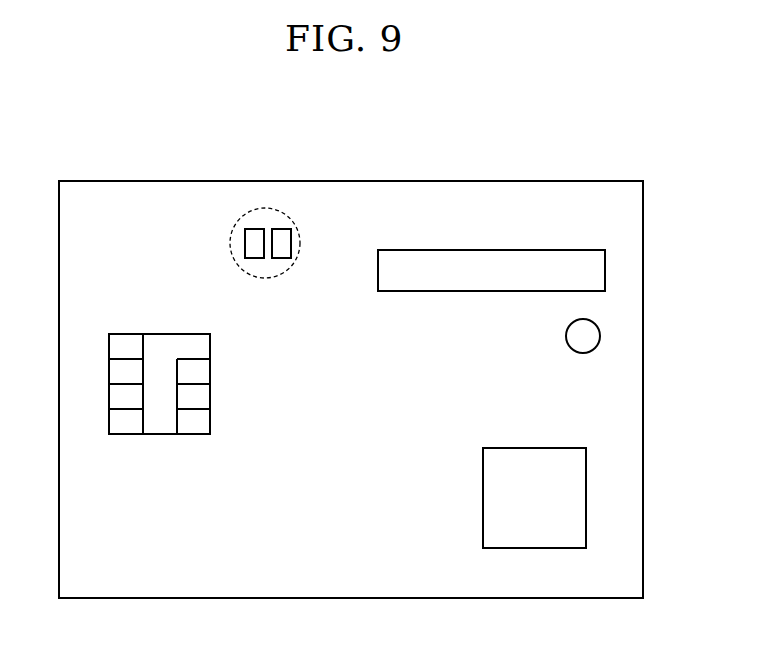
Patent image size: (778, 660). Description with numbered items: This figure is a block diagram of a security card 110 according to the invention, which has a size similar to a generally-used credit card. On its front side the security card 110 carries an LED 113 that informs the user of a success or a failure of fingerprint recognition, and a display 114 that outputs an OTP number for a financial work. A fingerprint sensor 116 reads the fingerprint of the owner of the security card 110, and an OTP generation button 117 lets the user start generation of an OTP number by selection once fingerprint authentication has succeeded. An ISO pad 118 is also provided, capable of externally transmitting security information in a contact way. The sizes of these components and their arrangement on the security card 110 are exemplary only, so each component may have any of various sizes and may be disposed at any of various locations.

The security card 110 is at (354, 181).
The LED 113 is at (300, 228).
The display 114 is at (493, 250).
The fingerprint sensor 116 is at (534, 448).
The OTP generation button 117 is at (567, 333).
The ISO pad 118 is at (162, 334).